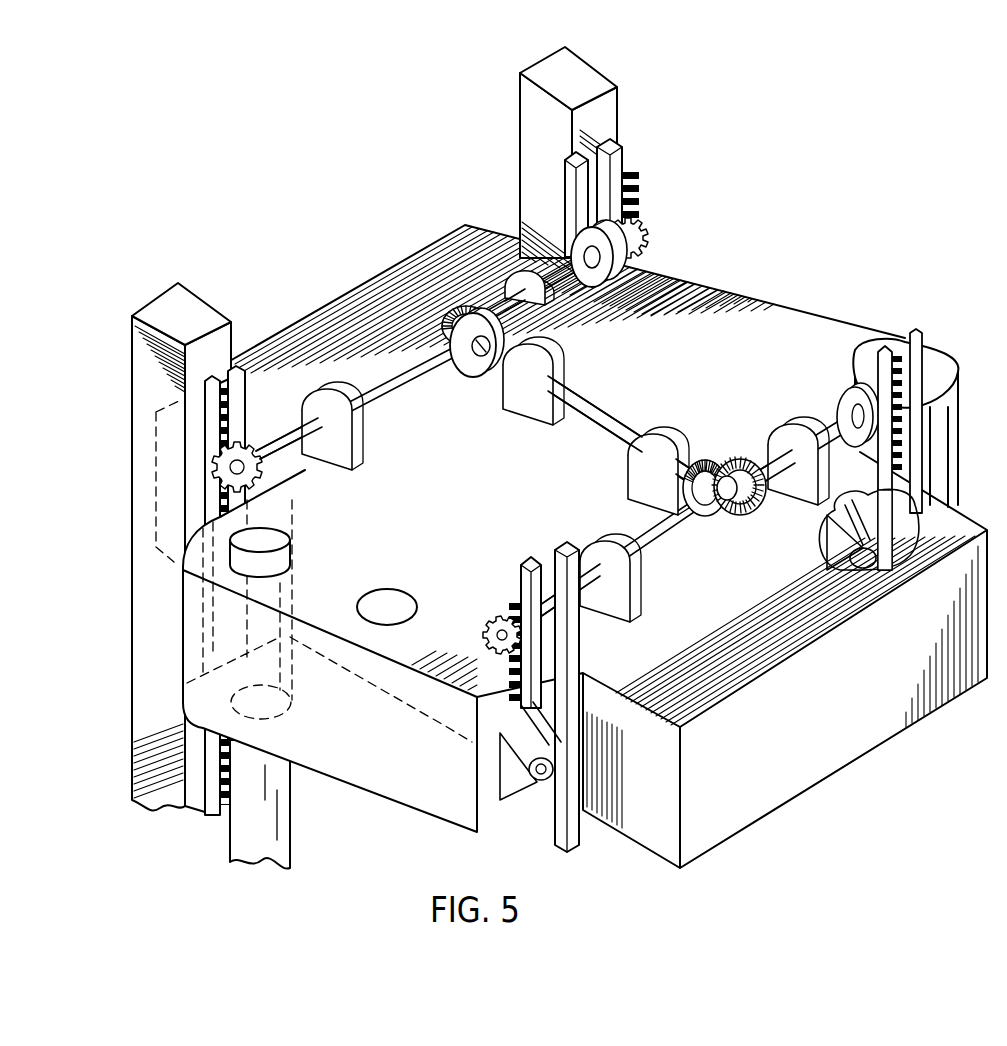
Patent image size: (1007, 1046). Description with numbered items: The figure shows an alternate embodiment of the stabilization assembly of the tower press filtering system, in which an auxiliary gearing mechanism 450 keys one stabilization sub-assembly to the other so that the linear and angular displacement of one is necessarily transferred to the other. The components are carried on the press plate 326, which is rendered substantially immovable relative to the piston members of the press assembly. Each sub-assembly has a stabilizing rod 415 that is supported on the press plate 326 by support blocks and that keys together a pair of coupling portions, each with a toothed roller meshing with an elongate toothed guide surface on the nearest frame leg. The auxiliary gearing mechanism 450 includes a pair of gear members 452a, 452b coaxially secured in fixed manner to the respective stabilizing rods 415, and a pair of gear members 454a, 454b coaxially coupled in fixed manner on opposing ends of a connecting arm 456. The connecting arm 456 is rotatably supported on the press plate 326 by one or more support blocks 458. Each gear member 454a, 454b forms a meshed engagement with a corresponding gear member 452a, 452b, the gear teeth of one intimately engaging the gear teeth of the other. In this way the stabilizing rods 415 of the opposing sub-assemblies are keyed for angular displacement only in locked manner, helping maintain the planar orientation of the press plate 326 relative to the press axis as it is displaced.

The press plate 326 is at (850, 340).
The stabilizing rod 415 is at (363, 392).
The auxiliary gearing mechanism 450 is at (606, 406).
The gear member 452a is at (765, 518).
The gear member 452b is at (453, 310).
The gear member 454a is at (687, 500).
The gear member 454b is at (420, 347).
The connecting arm 456 is at (553, 385).
The support block 458 is at (510, 403).